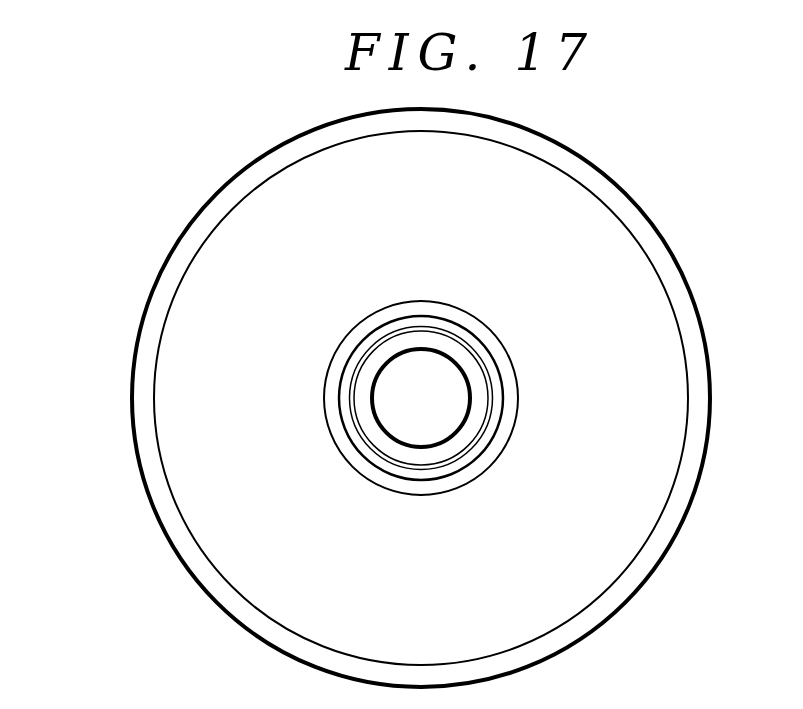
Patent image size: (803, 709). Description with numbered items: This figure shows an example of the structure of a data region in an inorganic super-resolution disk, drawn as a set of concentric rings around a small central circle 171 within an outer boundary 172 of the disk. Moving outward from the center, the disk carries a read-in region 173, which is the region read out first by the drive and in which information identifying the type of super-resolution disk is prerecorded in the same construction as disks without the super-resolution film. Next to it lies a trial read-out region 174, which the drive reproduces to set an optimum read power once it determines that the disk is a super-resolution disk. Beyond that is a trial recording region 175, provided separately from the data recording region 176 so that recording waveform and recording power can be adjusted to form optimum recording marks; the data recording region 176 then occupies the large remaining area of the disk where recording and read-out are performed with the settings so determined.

The center hole 171 is at (420, 447).
The outer periphery of disc 172 is at (133, 385).
The read-in region 173 is at (488, 398).
The trial read-out region 174 is at (495, 357).
The trial recording region 175 is at (472, 310).
The data recording region 176 is at (623, 542).